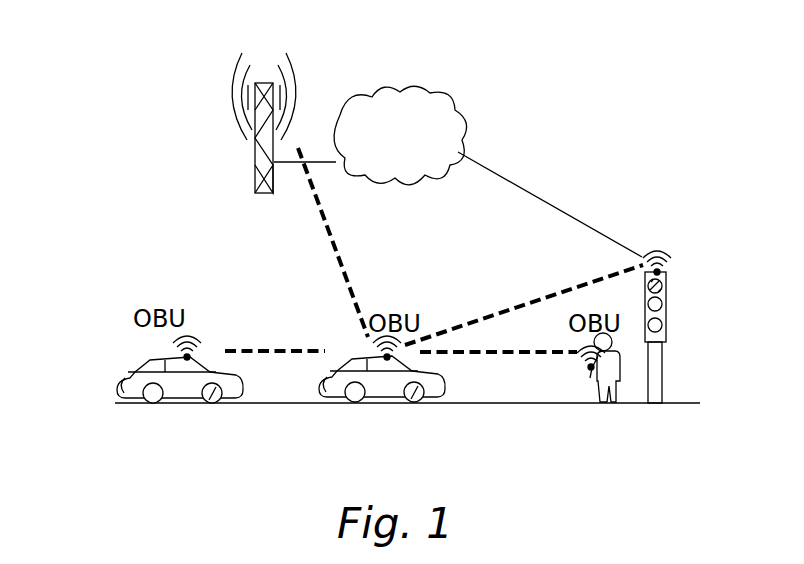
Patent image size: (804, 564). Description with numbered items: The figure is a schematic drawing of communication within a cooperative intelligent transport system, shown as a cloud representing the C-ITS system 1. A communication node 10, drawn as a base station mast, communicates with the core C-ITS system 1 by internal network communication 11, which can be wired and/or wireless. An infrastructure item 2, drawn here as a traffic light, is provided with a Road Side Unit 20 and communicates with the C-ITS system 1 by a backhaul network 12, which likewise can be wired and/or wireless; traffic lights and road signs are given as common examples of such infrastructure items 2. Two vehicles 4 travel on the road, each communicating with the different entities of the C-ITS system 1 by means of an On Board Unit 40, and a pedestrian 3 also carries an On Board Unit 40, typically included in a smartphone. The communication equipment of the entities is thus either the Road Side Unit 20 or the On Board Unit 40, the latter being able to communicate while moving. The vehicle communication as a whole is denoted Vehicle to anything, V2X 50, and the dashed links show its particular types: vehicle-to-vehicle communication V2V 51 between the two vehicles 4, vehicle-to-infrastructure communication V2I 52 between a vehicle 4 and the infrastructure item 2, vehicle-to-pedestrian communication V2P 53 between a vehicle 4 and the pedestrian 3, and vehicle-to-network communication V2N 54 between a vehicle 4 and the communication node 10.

The C-ITS system 1 is at (452, 113).
The infrastructure items 2 is at (667, 315).
The pedestrians 3 is at (598, 401).
The vehicles 4 is at (209, 397).
The communication nodes 10 is at (270, 82).
The internal network communication 11 is at (318, 163).
The backhaul network 12 is at (560, 208).
The Road Side Unit 20 is at (658, 360).
The On Board Unit 40 is at (167, 388).
The Vehicle to anything (V2X) communication 50 is at (133, 212).
The vehicle-to-vehicle (V2V) communication 51 is at (283, 353).
The vehicle-to-infrastructure (V2I) communication 52 is at (525, 300).
The vehicle-to-pedestrian (V2P) communication 53 is at (473, 352).
The vehicle-to-network (V2N) communication 54 is at (337, 255).